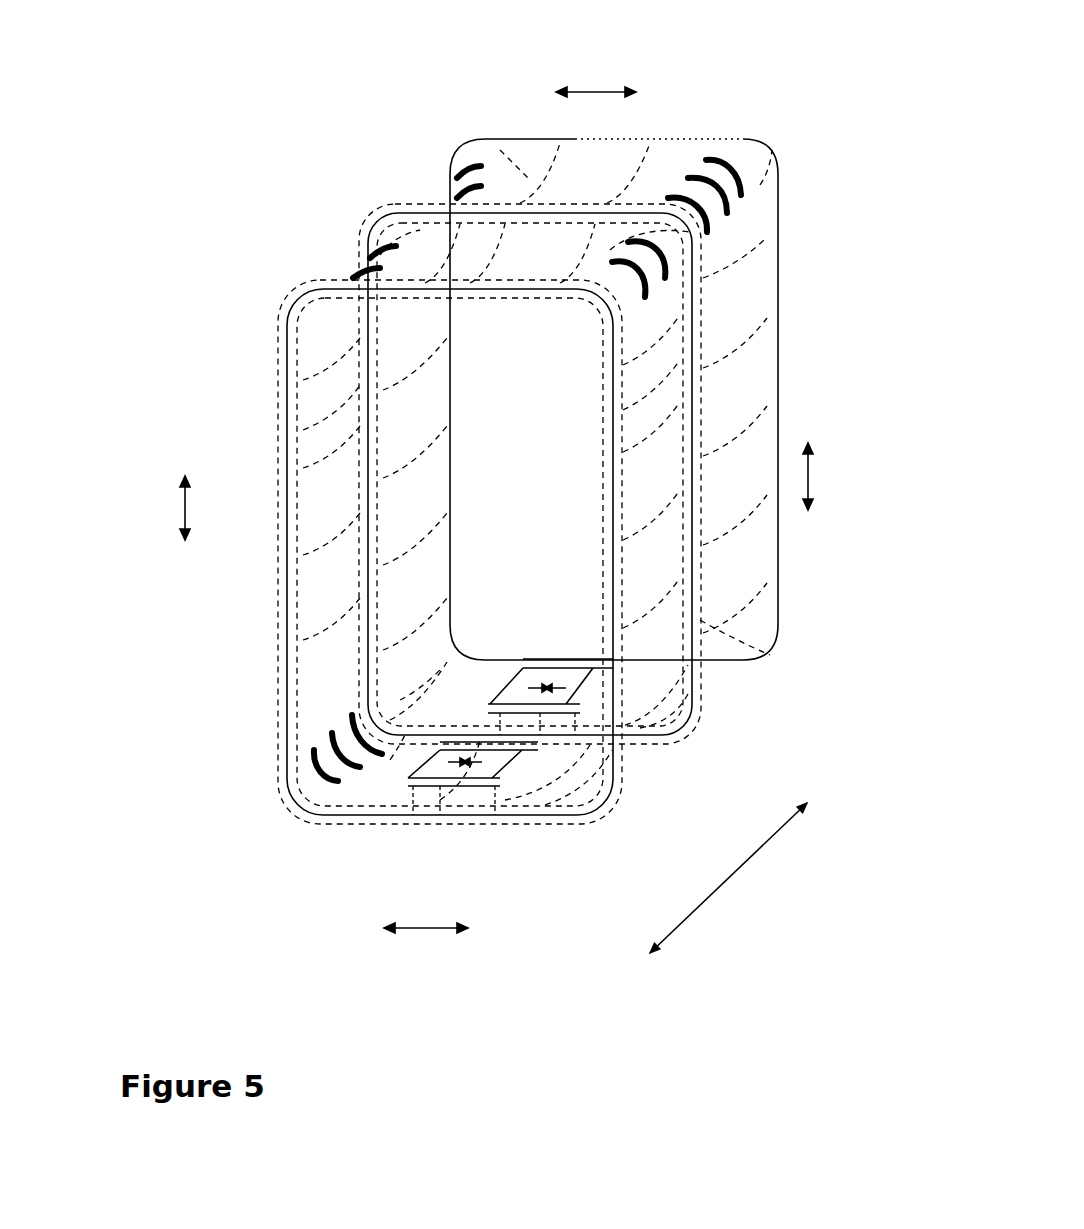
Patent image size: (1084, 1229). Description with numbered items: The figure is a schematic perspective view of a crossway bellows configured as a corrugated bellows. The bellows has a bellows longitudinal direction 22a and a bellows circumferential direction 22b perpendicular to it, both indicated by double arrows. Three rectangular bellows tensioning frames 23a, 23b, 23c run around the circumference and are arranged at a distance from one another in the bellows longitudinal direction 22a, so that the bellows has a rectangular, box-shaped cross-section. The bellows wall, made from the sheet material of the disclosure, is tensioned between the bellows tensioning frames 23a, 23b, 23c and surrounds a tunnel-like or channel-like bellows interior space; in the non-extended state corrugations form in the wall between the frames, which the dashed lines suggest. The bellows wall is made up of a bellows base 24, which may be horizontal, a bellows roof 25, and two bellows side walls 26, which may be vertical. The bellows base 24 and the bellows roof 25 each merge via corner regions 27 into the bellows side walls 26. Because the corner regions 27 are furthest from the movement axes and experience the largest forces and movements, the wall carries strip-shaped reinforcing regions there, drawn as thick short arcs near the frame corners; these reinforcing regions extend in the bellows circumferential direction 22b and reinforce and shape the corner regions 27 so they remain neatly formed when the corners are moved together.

The bellows tensioning frame 23a is at (291, 323).
The bellows tensioning frame 23b is at (378, 240).
The bellows tensioning frame 23c is at (779, 204).
The bellows base 24 is at (533, 770).
The bellows roof 25 is at (411, 262).
The bellows side walls 26 is at (336, 405).
The corner regions 27 is at (625, 300).
The bellows longitudinal direction 22a is at (728, 878).
The bellows circumferential direction 22b is at (496, 493).